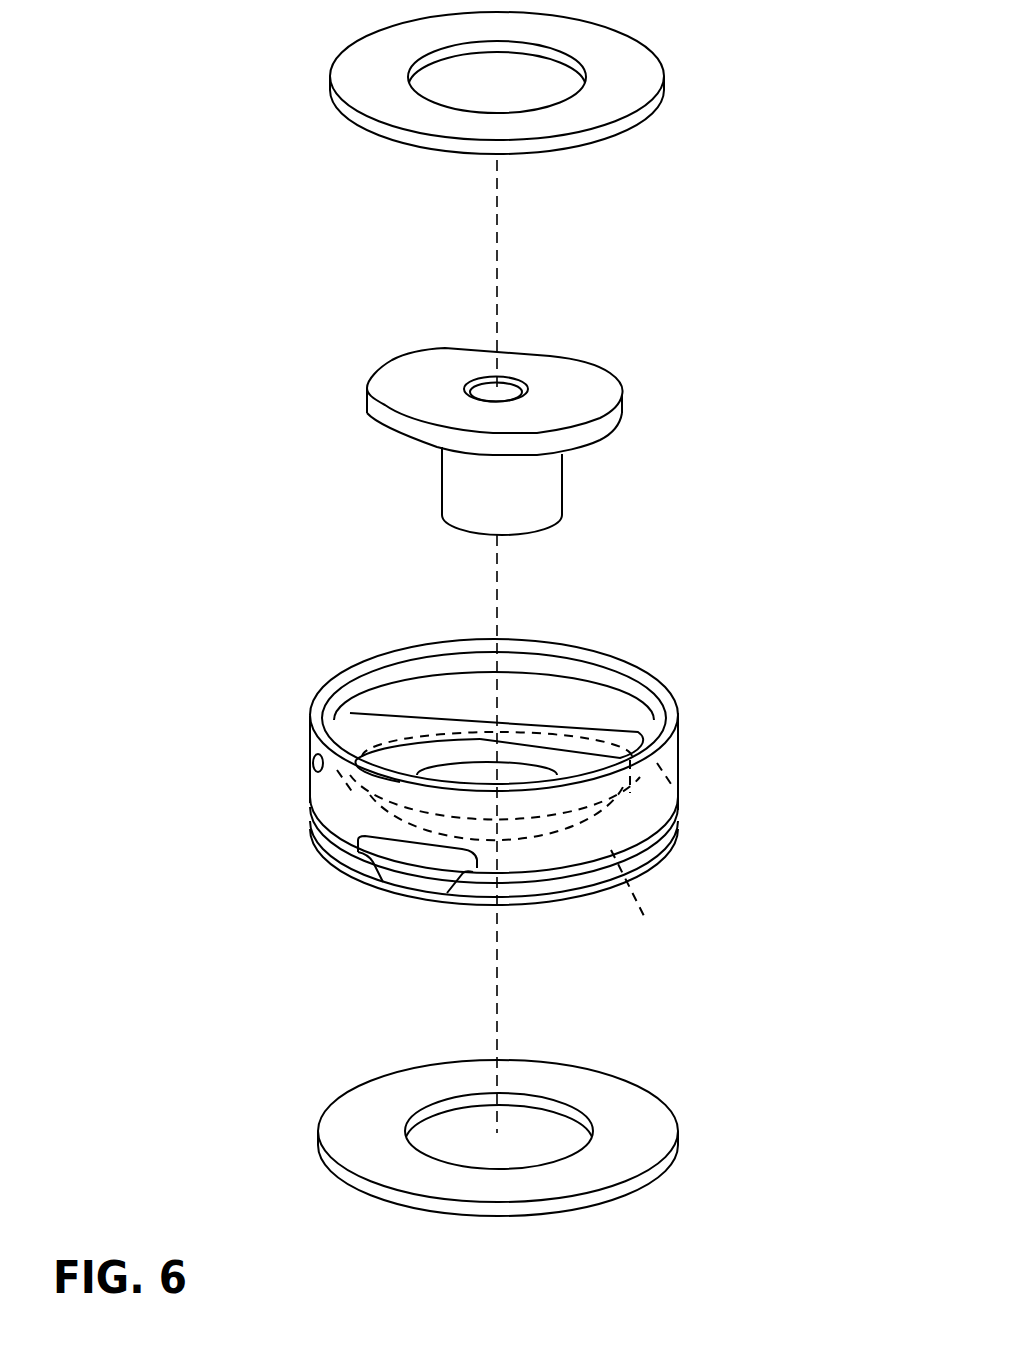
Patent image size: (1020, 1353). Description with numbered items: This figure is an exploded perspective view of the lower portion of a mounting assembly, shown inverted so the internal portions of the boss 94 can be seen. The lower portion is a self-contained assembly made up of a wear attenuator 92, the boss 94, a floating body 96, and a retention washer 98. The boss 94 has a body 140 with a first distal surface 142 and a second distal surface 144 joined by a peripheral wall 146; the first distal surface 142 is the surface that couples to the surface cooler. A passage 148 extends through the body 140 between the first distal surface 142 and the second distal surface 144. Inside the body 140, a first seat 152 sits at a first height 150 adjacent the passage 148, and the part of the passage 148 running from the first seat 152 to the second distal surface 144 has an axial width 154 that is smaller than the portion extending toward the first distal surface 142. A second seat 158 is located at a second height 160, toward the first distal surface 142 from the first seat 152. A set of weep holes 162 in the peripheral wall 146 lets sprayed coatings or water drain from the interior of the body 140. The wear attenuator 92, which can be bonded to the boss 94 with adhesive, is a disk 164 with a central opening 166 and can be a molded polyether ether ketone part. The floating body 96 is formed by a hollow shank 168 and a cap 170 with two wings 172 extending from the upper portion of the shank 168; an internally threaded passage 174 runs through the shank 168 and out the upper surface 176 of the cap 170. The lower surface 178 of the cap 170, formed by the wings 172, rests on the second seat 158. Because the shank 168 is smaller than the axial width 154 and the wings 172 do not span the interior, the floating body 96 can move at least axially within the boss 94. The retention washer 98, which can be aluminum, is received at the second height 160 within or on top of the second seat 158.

The wear attenuator 92 is at (553, 1138).
The boss 94 is at (464, 742).
The floating body 96 is at (499, 394).
The retention washer 98 is at (653, 113).
The body 140 is at (464, 742).
The first distal surface 142 is at (662, 702).
The second distal surface 144 is at (655, 867).
The peripheral wall 146 is at (678, 770).
The passage 148 is at (455, 782).
The first height 150 is at (678, 822).
The first seat 152 is at (641, 900).
The axial width 154 is at (520, 687).
The second seat 158 is at (553, 702).
The second height 160 is at (678, 732).
The weep holes 162 is at (313, 755).
The disk 164 is at (628, 1120).
The central opening 166 is at (558, 1154).
The shank 168 is at (547, 495).
The cap 170 is at (501, 358).
The wings 172 is at (499, 428).
The internally threaded passage 174 is at (510, 393).
The upper surface 176 is at (570, 400).
The lower surface 178 is at (382, 433).